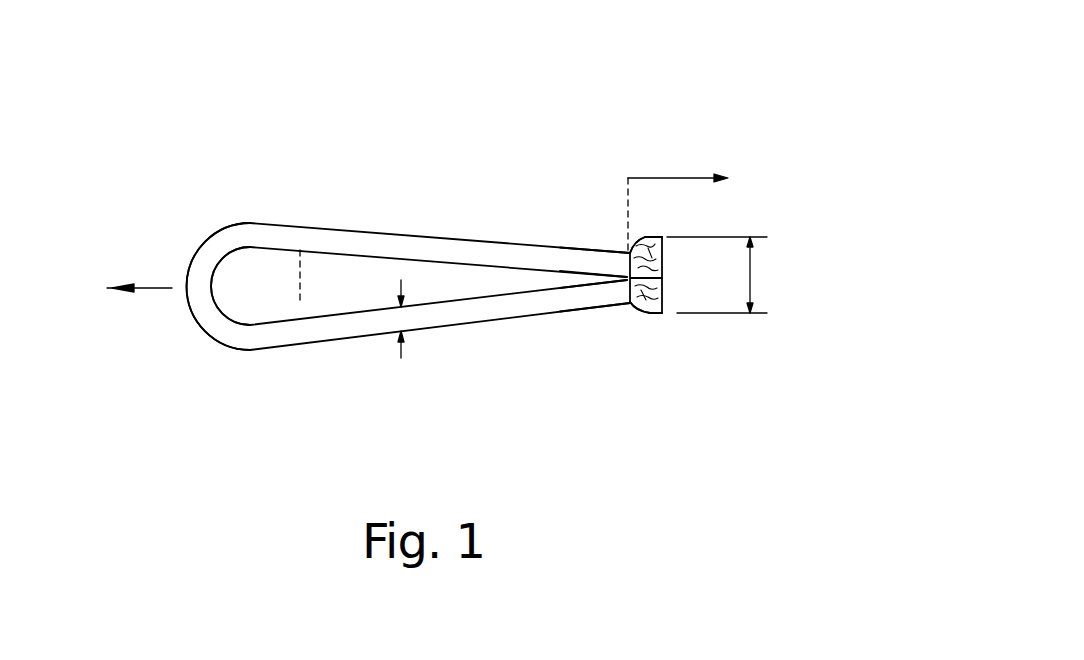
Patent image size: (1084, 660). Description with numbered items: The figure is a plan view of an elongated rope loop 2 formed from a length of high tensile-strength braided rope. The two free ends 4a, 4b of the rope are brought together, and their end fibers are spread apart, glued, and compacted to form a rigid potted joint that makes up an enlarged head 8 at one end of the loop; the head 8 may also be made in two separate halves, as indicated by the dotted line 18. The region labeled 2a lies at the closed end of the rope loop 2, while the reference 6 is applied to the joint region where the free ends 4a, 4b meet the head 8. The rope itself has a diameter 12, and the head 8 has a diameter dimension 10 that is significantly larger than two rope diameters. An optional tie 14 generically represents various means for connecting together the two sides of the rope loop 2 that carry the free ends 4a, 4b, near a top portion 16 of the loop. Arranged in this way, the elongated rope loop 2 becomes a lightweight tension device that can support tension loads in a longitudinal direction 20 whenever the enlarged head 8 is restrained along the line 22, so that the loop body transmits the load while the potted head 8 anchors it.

The elongated rope loop 2 is at (427, 250).
The closed end of loop 2a is at (248, 237).
The free end 4a is at (618, 262).
The free end 4b is at (613, 292).
The head 6 is at (652, 307).
The enlarged head 8 is at (667, 238).
The diameter dimension 10 is at (753, 270).
The diameter 12 is at (400, 318).
The tie 14 is at (300, 303).
The top portion 16 is at (207, 292).
The dotted line 18 is at (667, 308).
The longitudinal direction 20 is at (125, 288).
The line 22 is at (700, 178).